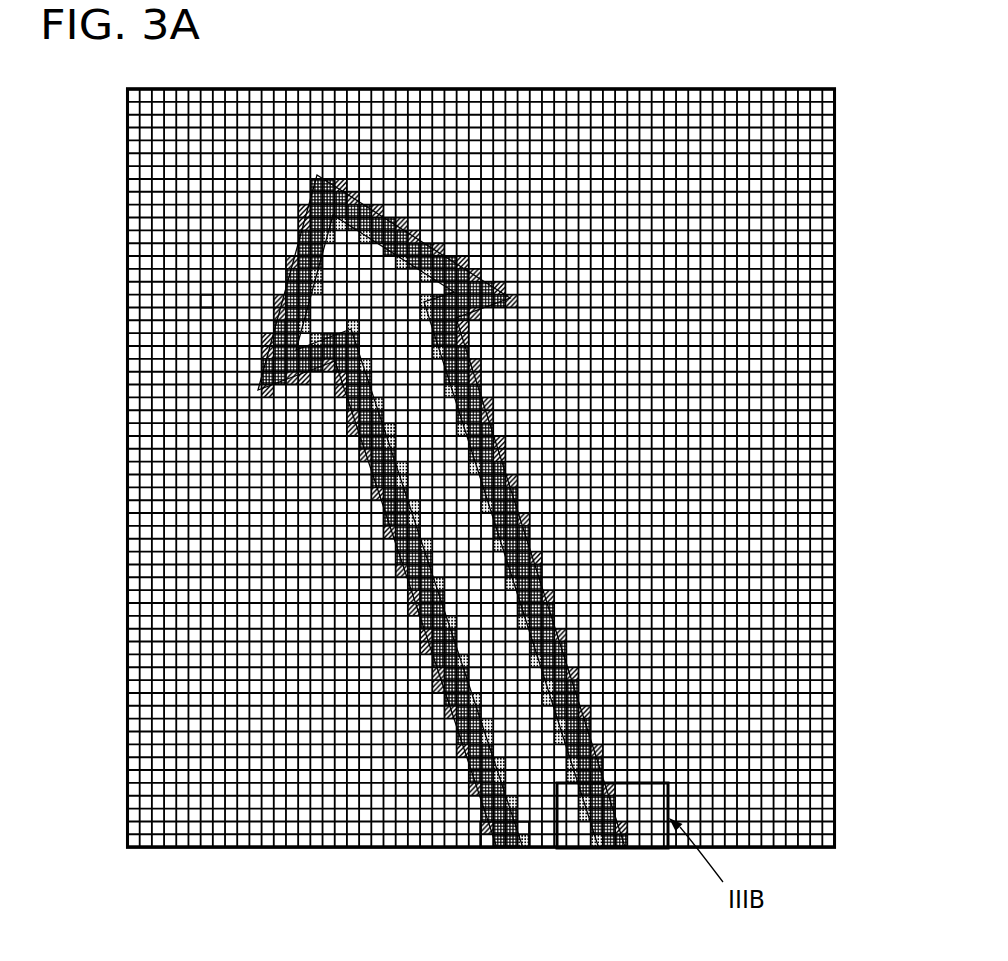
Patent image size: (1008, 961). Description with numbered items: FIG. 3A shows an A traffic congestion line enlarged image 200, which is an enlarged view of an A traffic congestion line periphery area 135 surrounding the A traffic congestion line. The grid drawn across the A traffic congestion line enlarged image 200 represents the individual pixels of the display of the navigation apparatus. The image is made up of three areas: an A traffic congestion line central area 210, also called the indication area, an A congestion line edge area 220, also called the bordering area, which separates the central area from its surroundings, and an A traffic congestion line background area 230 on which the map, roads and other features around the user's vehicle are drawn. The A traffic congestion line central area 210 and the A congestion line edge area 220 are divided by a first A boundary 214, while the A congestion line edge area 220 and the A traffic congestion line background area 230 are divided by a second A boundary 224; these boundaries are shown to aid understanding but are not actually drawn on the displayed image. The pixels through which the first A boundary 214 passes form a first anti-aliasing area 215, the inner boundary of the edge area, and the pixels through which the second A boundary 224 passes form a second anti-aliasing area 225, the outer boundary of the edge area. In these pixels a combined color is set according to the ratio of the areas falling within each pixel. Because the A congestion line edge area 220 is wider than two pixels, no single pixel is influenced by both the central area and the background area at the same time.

The A traffic congestion line enlarged image 200 is at (505, 90).
The A traffic congestion line periphery area 135 is at (693, 320).
The A traffic congestion line background area 230 is at (207, 303).
The second anti-aliasing area 225 is at (330, 418).
The A congestion line edge area 220 is at (365, 485).
The A traffic congestion line central area 210 is at (482, 600).
The first anti-aliasing area 215 is at (540, 690).
The second A boundary 224 is at (482, 838).
The first A boundary 214 is at (593, 838).